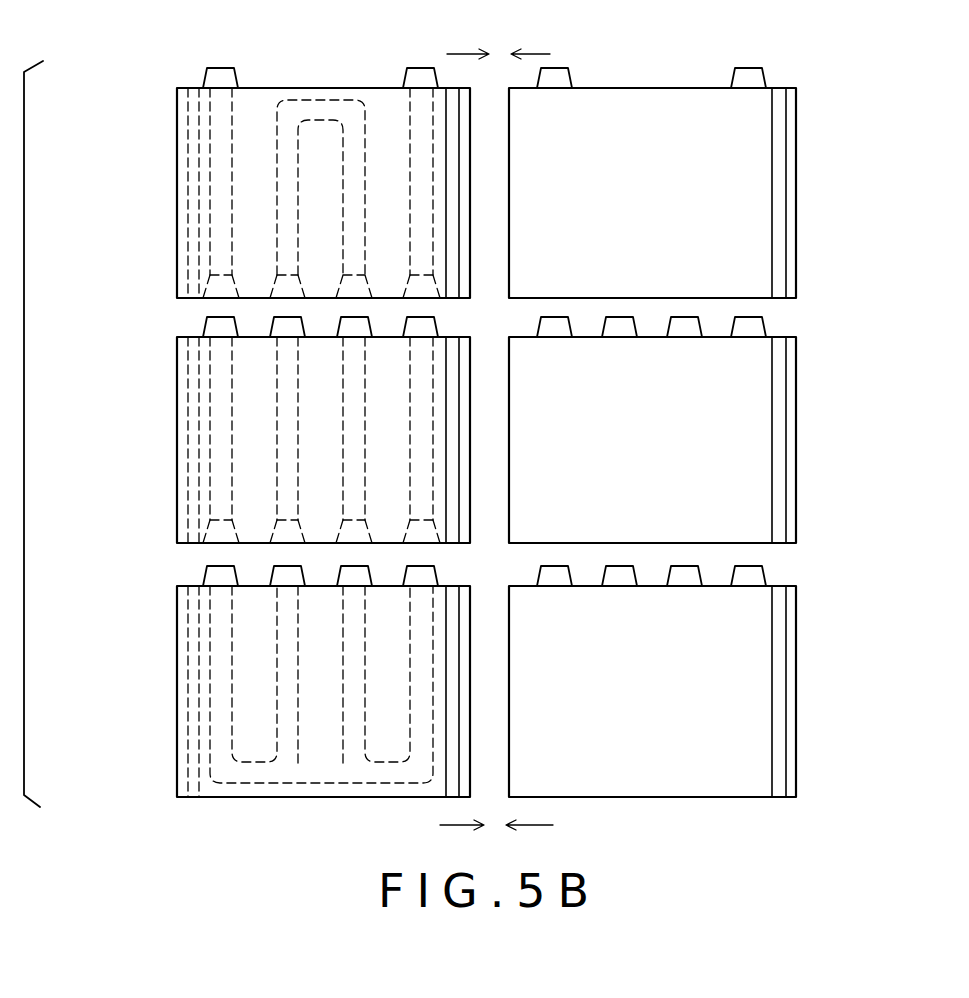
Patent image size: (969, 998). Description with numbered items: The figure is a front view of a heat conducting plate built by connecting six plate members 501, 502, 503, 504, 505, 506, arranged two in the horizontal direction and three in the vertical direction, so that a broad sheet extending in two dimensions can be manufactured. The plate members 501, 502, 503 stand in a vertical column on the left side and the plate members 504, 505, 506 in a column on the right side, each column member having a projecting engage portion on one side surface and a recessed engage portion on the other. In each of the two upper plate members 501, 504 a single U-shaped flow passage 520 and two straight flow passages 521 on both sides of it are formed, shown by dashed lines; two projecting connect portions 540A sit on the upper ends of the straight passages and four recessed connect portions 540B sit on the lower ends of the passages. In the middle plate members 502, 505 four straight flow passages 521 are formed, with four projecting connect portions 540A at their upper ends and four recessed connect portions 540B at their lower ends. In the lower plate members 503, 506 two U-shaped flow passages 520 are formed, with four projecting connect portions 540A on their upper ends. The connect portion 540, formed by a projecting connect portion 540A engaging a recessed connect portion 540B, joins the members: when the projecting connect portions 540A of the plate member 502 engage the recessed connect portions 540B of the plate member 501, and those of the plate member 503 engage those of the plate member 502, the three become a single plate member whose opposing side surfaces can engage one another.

The plate member 501 is at (176, 178).
The plate member 502 is at (176, 460).
The plate member 503 is at (176, 700).
The plate member 504 is at (796, 228).
The plate member 505 is at (796, 490).
The plate member 506 is at (796, 735).
The U-shaped flow passage 520 is at (347, 155).
The straight flow passage 521 is at (225, 125).
The connect portion 540 is at (236, 327).
The projecting connect portion 540A is at (205, 330).
The recessed connect portion 540B is at (206, 290).